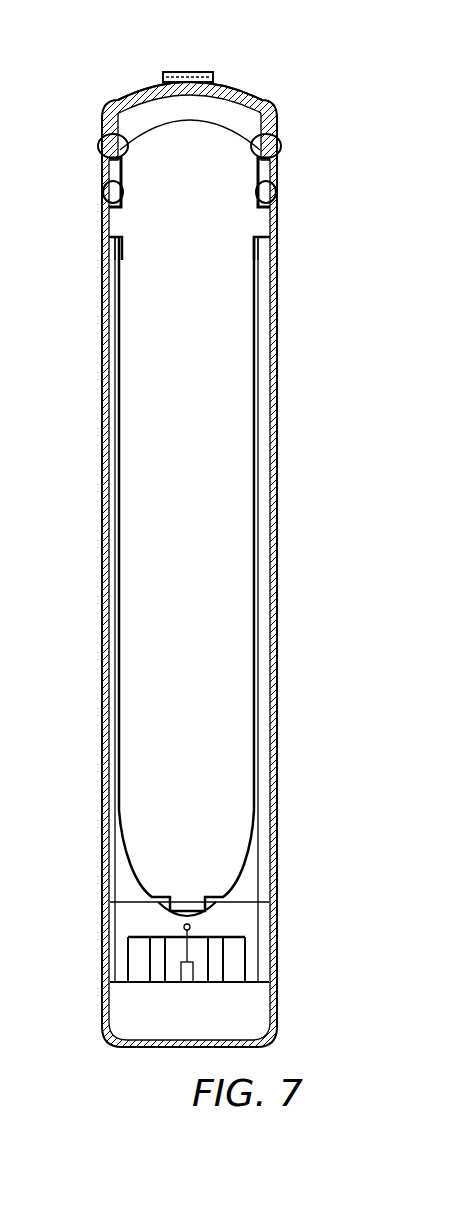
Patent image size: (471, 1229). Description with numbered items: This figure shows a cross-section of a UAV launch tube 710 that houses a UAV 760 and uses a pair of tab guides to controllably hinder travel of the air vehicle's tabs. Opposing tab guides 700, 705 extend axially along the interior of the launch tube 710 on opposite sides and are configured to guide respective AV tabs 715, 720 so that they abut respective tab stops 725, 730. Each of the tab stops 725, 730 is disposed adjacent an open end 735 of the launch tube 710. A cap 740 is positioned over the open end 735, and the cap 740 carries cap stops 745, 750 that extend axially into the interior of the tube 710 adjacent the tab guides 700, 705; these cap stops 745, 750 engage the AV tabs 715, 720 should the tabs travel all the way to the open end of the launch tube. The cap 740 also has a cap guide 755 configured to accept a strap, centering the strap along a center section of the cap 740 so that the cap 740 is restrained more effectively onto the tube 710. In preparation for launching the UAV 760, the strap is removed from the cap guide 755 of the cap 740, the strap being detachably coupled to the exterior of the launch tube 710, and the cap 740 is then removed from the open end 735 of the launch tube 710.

The tab guide 700 is at (262, 322).
The tab guide 705 is at (103, 325).
The launch tube 710 is at (277, 405).
The AV tab 715 is at (262, 222).
The AV tab 720 is at (113, 222).
The tab stop 725 is at (272, 192).
The tab stop 730 is at (105, 192).
The open end 735 is at (127, 122).
The cap 740 is at (248, 84).
The cap stop 745 is at (108, 140).
The cap stop 750 is at (272, 140).
The cap guide 755 is at (188, 72).
The UAV 760 is at (226, 542).